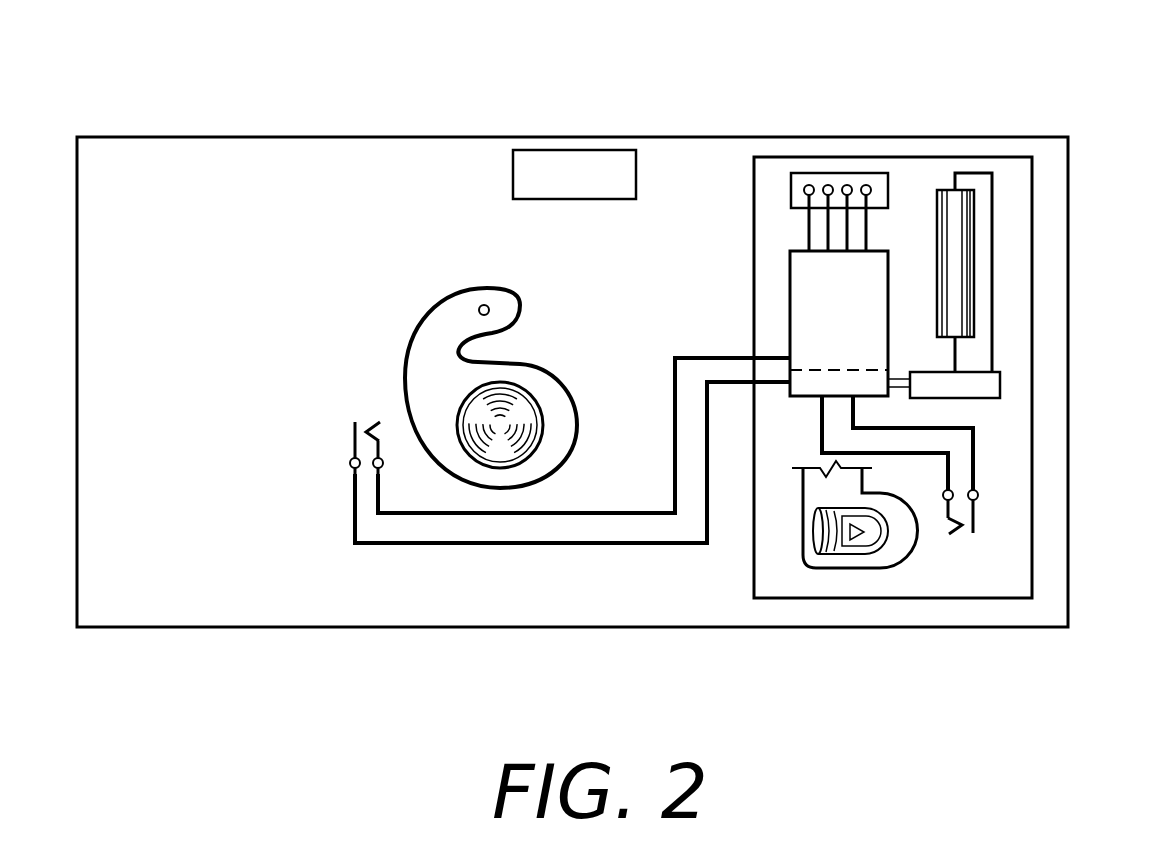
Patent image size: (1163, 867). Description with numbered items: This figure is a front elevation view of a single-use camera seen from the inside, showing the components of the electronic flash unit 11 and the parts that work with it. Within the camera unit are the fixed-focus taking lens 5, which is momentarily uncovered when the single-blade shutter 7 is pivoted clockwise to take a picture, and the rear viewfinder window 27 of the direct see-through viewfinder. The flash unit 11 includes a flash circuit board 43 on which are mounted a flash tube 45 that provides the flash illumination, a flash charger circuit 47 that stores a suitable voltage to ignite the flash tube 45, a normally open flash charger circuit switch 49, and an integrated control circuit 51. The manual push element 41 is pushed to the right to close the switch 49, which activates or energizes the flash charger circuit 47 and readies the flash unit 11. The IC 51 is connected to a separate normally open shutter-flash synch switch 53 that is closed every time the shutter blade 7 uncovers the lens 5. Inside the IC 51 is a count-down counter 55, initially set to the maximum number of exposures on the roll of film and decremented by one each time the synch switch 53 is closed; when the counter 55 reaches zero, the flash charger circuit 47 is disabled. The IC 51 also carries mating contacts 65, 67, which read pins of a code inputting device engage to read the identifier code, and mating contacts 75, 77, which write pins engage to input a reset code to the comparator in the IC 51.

The taking lens 5 is at (522, 388).
The single-blade shutter 7 is at (577, 438).
The electronic flash unit 11 is at (1046, 302).
The rear viewfinder window 27 is at (572, 178).
The manual push element 41 is at (815, 553).
The flash circuit board 43 is at (1032, 488).
The flash tube 45 is at (973, 257).
The flash charger circuit 47 is at (1000, 383).
The flash charger circuit switch 49 is at (962, 538).
The integrated control circuit 51 is at (790, 305).
The shutter-flash synch switch 53 is at (342, 432).
The count-down counter 55 is at (806, 385).
The mating contact 65 is at (809, 184).
The mating contact 67 is at (828, 184).
The mating contact 75 is at (847, 184).
The mating contact 77 is at (866, 184).